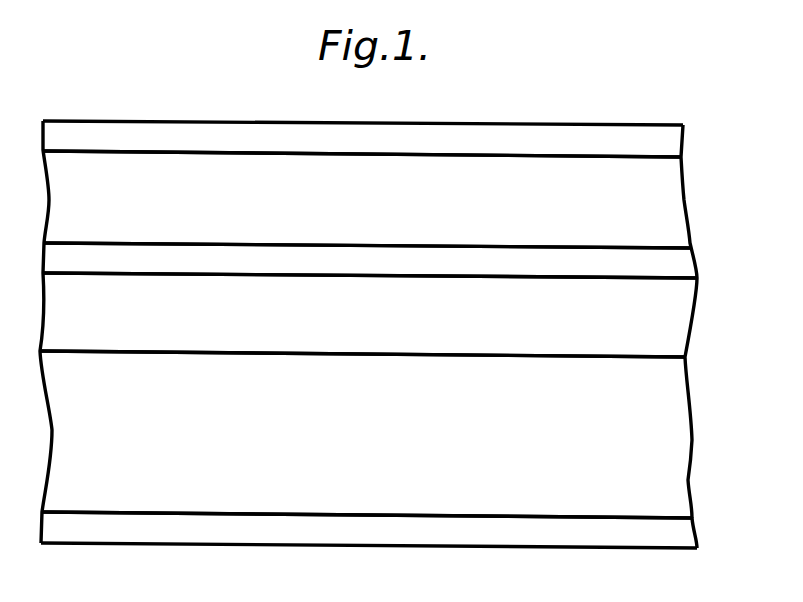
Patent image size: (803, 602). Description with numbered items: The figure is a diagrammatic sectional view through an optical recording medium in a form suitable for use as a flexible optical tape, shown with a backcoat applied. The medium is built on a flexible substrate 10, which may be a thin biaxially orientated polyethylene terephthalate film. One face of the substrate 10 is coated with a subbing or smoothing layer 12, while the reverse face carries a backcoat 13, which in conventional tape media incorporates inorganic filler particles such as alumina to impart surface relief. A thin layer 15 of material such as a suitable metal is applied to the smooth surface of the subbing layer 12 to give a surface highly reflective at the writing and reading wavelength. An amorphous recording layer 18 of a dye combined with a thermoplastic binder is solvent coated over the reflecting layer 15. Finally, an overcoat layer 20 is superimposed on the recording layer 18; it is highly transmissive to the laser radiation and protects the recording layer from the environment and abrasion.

The overcoat layer 20 is at (672, 143).
The amorphous recording layer 18 is at (668, 205).
The thin layer 15 is at (680, 265).
The subbing or smoothing layer 12 is at (673, 328).
The flexible substrate 10 is at (672, 443).
The backcoat 13 is at (672, 530).